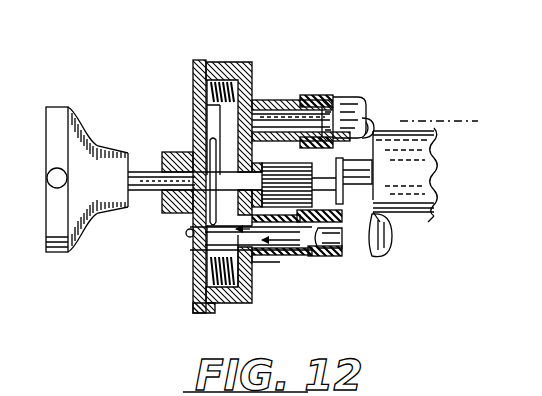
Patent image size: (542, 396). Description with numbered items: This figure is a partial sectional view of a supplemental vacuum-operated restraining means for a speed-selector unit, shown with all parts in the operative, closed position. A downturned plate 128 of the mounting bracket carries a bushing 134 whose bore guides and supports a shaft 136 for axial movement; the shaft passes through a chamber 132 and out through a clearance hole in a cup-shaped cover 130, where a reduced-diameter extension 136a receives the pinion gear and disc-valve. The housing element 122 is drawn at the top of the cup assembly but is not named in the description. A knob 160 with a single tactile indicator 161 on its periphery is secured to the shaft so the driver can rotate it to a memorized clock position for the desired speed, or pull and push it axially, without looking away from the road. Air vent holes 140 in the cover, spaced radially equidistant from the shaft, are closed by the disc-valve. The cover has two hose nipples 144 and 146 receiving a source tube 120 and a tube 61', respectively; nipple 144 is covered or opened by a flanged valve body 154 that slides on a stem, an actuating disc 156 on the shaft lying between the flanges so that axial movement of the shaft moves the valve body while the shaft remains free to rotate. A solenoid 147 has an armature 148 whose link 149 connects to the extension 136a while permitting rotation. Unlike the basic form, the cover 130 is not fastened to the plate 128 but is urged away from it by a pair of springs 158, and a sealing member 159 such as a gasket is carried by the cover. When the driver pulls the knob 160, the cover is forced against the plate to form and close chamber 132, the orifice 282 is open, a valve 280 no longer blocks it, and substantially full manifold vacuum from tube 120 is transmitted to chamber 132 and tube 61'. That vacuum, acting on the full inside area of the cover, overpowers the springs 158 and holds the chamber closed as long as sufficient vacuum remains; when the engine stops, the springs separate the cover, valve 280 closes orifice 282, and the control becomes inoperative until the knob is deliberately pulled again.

The tube 61' is at (369, 96).
The tube 120 is at (392, 232).
The cup housing 122 is at (259, 62).
The plate 128 is at (194, 63).
The cover 130 is at (254, 100).
The chamber 132 is at (215, 111).
The bushing 134 is at (173, 152).
The shaft 136 is at (143, 189).
The reduced-diameter portion of the shaft 136a is at (437, 177).
The air vent holes 140 is at (256, 150).
The hose nipple 144 is at (280, 255).
The hose nipple 146 is at (268, 98).
The solenoid 147 is at (431, 146).
The armature 148 is at (353, 163).
The link 149 is at (433, 181).
The valve body 154 is at (251, 257).
The actuating disc 156 is at (209, 142).
The springs 158 is at (223, 122).
The sealing member 159 is at (215, 302).
The knob 160 is at (82, 217).
The tactile indicator 161 is at (47, 178).
The valve 280 is at (385, 244).
The orifice 282 is at (332, 250).